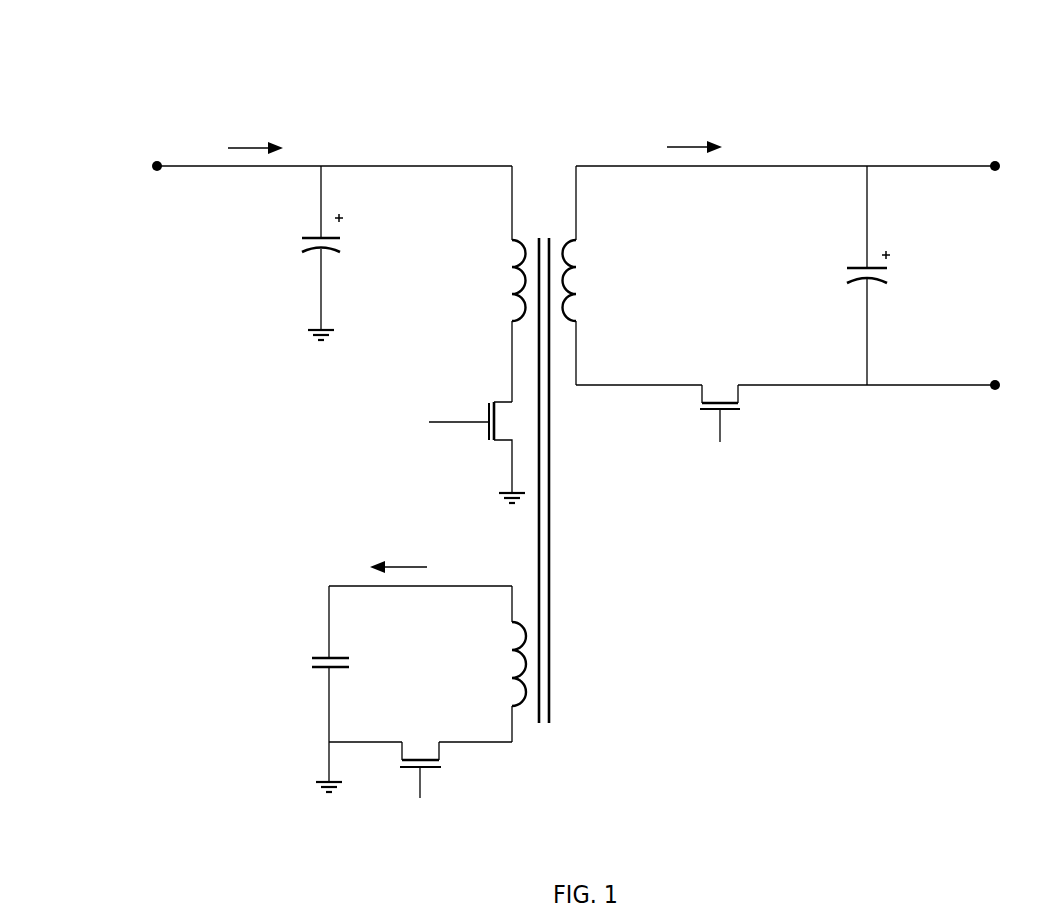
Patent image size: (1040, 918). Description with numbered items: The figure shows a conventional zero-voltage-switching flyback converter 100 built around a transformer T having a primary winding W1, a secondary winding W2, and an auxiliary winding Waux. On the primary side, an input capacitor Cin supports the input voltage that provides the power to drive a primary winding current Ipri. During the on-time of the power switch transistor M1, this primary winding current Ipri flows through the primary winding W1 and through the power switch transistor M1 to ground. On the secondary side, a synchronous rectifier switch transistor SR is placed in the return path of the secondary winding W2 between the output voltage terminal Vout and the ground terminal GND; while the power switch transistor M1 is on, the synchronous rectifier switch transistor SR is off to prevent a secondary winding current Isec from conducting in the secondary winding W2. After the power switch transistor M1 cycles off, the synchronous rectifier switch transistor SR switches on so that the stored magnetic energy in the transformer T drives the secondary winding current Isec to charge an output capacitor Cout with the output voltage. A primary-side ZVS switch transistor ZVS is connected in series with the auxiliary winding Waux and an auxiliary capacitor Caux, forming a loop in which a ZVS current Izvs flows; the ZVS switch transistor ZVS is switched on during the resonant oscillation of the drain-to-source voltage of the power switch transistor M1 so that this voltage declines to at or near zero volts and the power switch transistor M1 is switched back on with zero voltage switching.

The ZVS flyback converter 100 is at (377, 63).
The primary winding current Ipri is at (234, 146).
The secondary winding current Isec is at (669, 144).
The ZVS current Izvs is at (424, 568).
The output voltage Vout is at (996, 151).
The ground GND is at (996, 369).
The input capacitor Cin is at (346, 253).
The output capacitor Cout is at (895, 275).
The auxiliary capacitor Caux is at (294, 689).
The transformer T is at (545, 436).
The primary winding W1 is at (494, 284).
The secondary winding W2 is at (594, 243).
The auxiliary winding Waux is at (488, 664).
The power switch transistor M1 is at (479, 452).
The synchronous rectifier switch transistor SR is at (720, 398).
The ZVS switch transistor ZVS is at (425, 752).